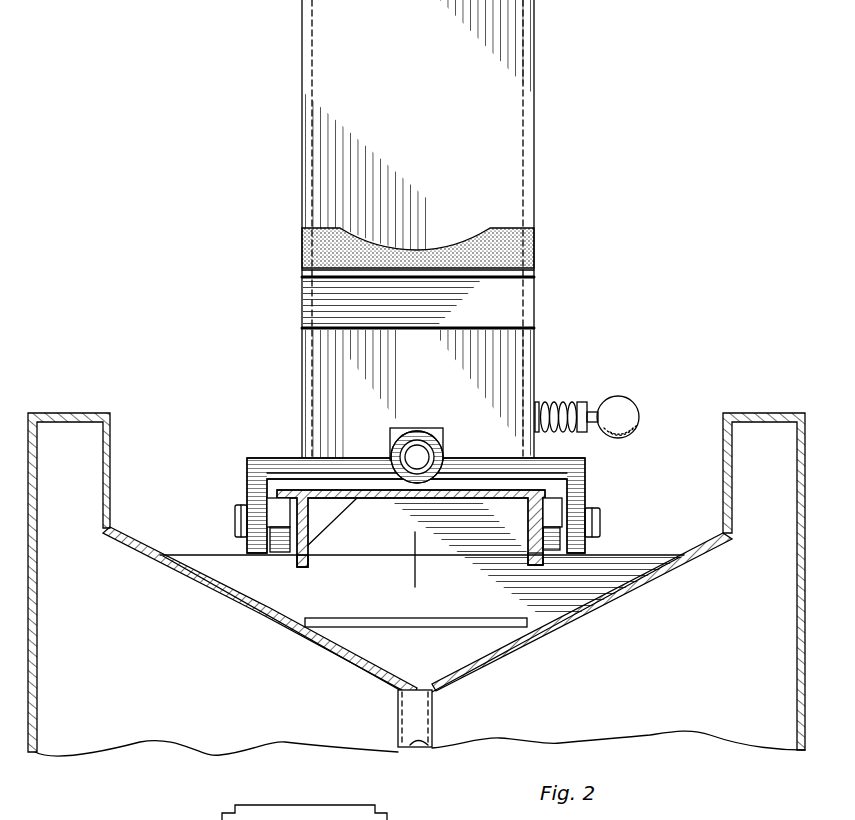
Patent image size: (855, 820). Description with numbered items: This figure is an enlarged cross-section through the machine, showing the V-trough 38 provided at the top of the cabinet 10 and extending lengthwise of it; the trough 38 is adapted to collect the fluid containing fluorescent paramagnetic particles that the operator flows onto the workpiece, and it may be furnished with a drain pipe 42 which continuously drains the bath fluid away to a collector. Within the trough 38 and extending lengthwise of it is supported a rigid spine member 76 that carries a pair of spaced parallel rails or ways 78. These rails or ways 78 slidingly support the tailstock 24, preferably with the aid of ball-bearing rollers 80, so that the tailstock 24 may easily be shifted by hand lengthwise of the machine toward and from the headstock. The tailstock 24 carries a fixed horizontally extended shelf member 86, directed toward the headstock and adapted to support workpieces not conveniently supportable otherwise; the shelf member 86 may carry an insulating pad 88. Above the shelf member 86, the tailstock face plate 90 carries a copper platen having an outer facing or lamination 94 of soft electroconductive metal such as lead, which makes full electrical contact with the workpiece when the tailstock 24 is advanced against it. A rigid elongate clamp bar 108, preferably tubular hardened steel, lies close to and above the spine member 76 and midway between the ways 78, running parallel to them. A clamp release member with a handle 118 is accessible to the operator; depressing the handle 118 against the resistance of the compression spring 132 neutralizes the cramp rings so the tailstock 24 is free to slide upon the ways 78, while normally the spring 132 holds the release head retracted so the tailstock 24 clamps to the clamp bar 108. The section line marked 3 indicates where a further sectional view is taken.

The cabinet 10 is at (800, 720).
The outer facing or lamination 94 is at (508, 108).
The insulating pad 88 is at (513, 227).
The shelf member 86 is at (534, 270).
The tailstock 24 is at (534, 338).
The tailstock face plate 90 is at (507, 358).
The compression spring 132 is at (558, 404).
The handle 118 is at (607, 401).
The clamp bar 108 is at (425, 448).
The spine member 76 is at (325, 498).
The rails or ways 78 is at (291, 556).
The ball-bearing rollers 80 is at (281, 508).
The V-trough 38 is at (222, 598).
The drain pipe 42 is at (405, 722).
The section line indicator 3 is at (393, 570).